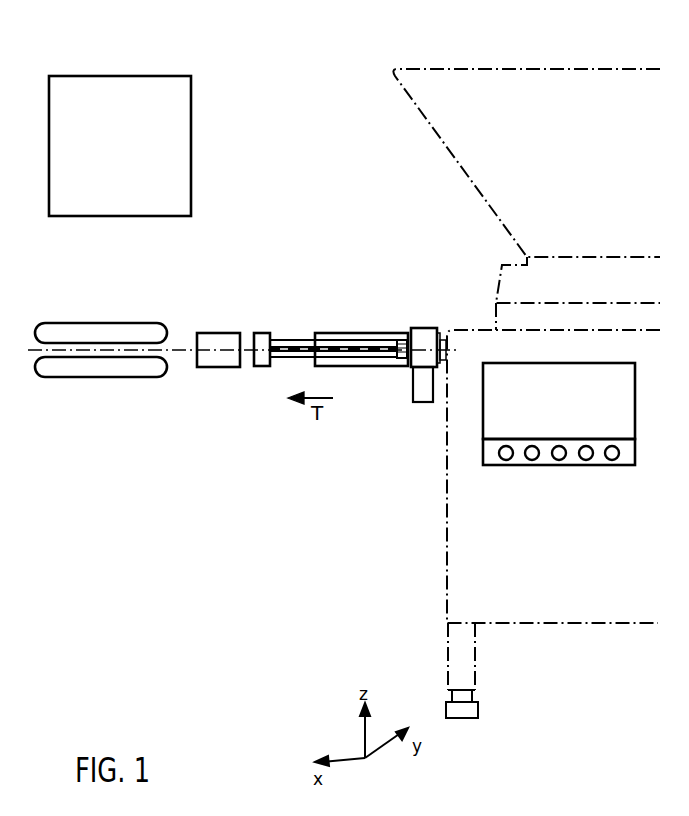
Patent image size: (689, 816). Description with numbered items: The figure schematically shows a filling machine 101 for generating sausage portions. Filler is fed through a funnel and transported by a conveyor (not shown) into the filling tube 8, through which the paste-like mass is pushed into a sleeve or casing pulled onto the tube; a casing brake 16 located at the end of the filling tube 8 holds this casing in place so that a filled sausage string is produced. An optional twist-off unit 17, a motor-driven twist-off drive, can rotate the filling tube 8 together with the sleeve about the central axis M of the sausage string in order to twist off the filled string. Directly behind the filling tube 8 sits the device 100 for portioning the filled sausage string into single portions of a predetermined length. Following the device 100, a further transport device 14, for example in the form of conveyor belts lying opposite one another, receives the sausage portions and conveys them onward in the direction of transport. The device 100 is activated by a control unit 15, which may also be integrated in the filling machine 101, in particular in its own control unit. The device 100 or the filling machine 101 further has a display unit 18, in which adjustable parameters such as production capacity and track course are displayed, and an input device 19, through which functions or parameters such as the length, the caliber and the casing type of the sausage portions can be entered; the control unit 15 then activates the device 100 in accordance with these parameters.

The control unit 15 is at (174, 76).
The filling machine 101 is at (600, 58).
The central axis M is at (178, 345).
The transport device 14 is at (46, 377).
The device for portioning 100 is at (218, 367).
The casing brake 16 is at (261, 333).
The filling tube 8 is at (293, 340).
The twist-off unit 17 is at (424, 328).
The display unit 18 is at (636, 378).
The input device 19 is at (636, 447).